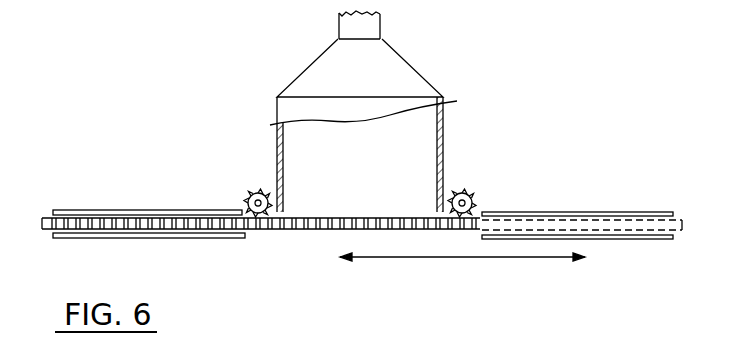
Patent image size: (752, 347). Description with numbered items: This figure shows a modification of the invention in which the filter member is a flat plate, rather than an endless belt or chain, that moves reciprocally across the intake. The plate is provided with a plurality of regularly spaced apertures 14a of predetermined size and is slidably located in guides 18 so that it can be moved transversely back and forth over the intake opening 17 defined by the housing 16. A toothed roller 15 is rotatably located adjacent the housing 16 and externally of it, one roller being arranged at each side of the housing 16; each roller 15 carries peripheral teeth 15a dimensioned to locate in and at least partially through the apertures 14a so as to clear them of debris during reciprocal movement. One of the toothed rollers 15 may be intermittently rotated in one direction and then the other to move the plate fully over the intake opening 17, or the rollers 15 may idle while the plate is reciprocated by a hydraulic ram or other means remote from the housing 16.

The housing 16 is at (428, 80).
The intake opening 17 is at (397, 197).
The toothed roller 15 is at (250, 202).
The peripheral teeth 15a is at (250, 193).
The apertures 14a is at (382, 230).
The guides 18 is at (92, 210).